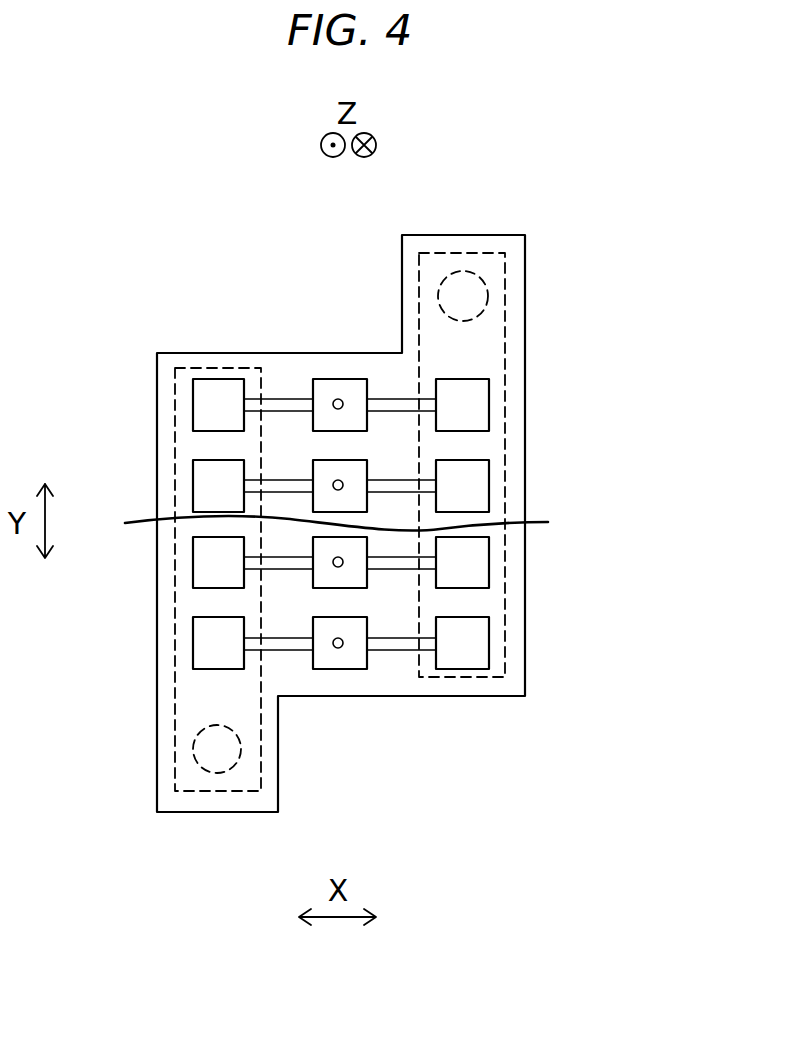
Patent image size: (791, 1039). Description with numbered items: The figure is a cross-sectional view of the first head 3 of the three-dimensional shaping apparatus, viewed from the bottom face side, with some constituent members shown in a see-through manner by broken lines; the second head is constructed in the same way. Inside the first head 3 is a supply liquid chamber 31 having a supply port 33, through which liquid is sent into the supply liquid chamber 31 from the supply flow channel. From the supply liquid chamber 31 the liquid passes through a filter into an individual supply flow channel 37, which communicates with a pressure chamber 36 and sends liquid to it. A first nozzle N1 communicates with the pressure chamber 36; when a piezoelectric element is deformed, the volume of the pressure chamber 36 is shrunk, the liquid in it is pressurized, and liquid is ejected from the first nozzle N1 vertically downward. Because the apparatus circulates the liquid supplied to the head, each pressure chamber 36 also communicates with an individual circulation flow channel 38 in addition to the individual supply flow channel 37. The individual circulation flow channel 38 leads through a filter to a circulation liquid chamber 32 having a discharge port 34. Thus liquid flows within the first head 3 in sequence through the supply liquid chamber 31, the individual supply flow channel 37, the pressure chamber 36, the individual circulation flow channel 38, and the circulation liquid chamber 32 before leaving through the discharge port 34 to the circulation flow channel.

The first head 3 is at (574, 186).
The supply liquid chamber 31 is at (507, 307).
The circulation liquid chamber 32 is at (172, 727).
The supply port 33 is at (471, 266).
The discharge port 34 is at (208, 775).
The pressure chamber 36 is at (329, 378).
The individual supply flow channel 37 is at (476, 378).
The individual circulation flow channel 38 is at (220, 432).
The first nozzle N1 is at (343, 408).